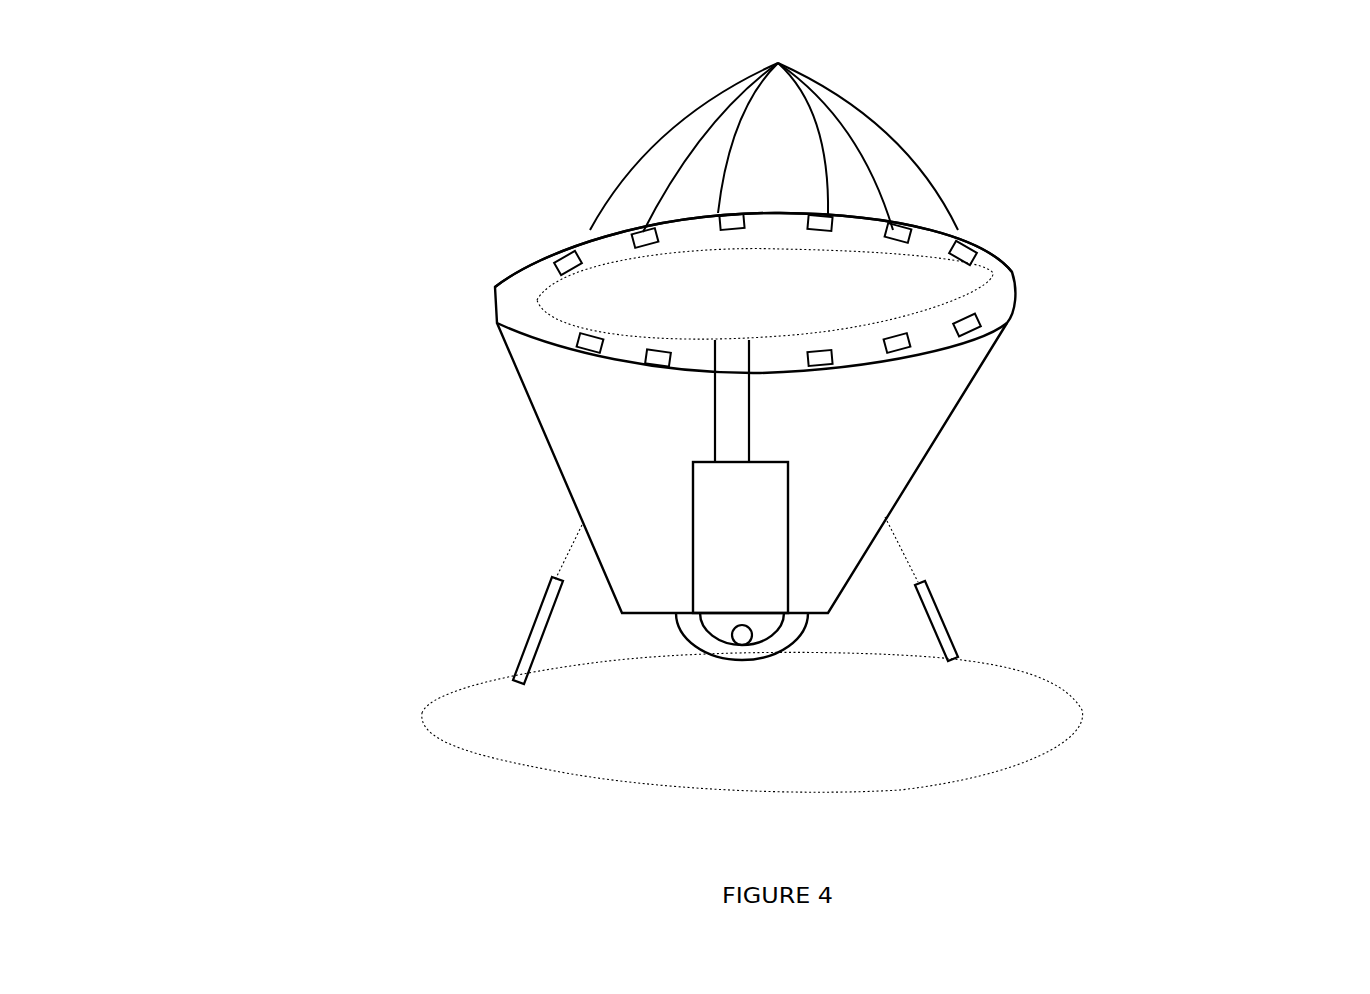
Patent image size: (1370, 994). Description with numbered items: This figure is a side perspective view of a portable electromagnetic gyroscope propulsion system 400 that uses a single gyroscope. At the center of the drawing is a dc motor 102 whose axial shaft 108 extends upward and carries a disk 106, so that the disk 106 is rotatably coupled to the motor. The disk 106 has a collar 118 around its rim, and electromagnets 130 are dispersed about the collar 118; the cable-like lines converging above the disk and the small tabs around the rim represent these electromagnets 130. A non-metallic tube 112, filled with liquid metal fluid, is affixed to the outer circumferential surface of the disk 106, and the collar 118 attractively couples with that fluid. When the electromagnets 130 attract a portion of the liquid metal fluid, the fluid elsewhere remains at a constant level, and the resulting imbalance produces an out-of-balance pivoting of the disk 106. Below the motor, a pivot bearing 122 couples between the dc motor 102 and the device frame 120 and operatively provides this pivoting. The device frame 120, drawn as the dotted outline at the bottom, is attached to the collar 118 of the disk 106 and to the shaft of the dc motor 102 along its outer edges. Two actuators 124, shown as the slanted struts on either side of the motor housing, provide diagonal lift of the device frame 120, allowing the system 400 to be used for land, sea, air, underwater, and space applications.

The collar lifting assembly 400 is at (366, 721).
The electromagnets 130 is at (498, 432).
The collar 118 is at (704, 248).
The disk 106 is at (823, 300).
The non-metallic tube 112 is at (943, 293).
The axial shaft 108 is at (727, 393).
The dc motor 102 is at (757, 581).
The pivot bearing 122 is at (787, 642).
The actuator 124 is at (1146, 523).
The device frame 120 is at (892, 697).